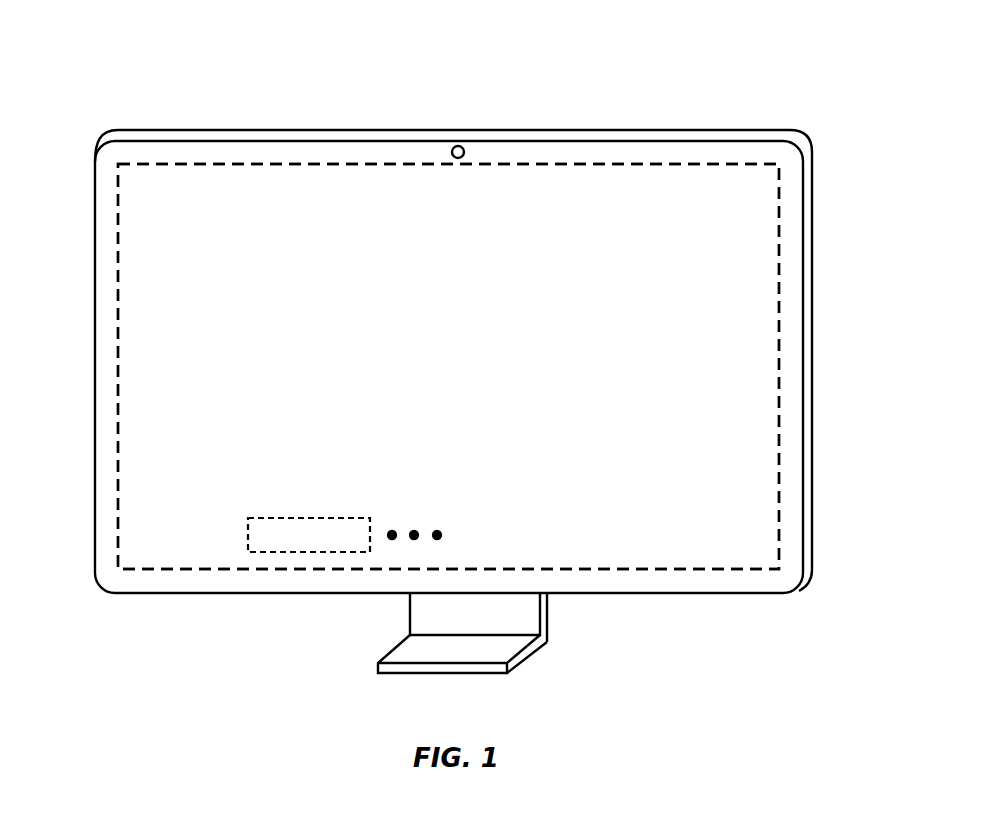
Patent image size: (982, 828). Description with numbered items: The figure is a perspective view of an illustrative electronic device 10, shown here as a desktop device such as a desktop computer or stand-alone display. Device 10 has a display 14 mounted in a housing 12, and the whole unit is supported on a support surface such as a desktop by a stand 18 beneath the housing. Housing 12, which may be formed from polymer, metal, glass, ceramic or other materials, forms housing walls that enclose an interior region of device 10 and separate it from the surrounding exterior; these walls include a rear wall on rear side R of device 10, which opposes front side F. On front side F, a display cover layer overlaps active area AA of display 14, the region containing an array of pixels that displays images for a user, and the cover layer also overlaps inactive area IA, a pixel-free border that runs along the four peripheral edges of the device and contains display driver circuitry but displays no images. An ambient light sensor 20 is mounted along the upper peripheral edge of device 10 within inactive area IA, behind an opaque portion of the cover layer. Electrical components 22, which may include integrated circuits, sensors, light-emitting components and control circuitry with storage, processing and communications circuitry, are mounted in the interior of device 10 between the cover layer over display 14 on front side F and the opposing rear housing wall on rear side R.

The electronic device 10 is at (673, 78).
The housing 12 is at (813, 517).
The display 14 is at (754, 249).
The stand 18 is at (550, 620).
The ambient light sensor 20 is at (452, 151).
The electrical components 22 is at (273, 553).
The rear side R is at (191, 122).
The front side F is at (150, 503).
The inactive area IA is at (792, 305).
The active area AA is at (778, 358).